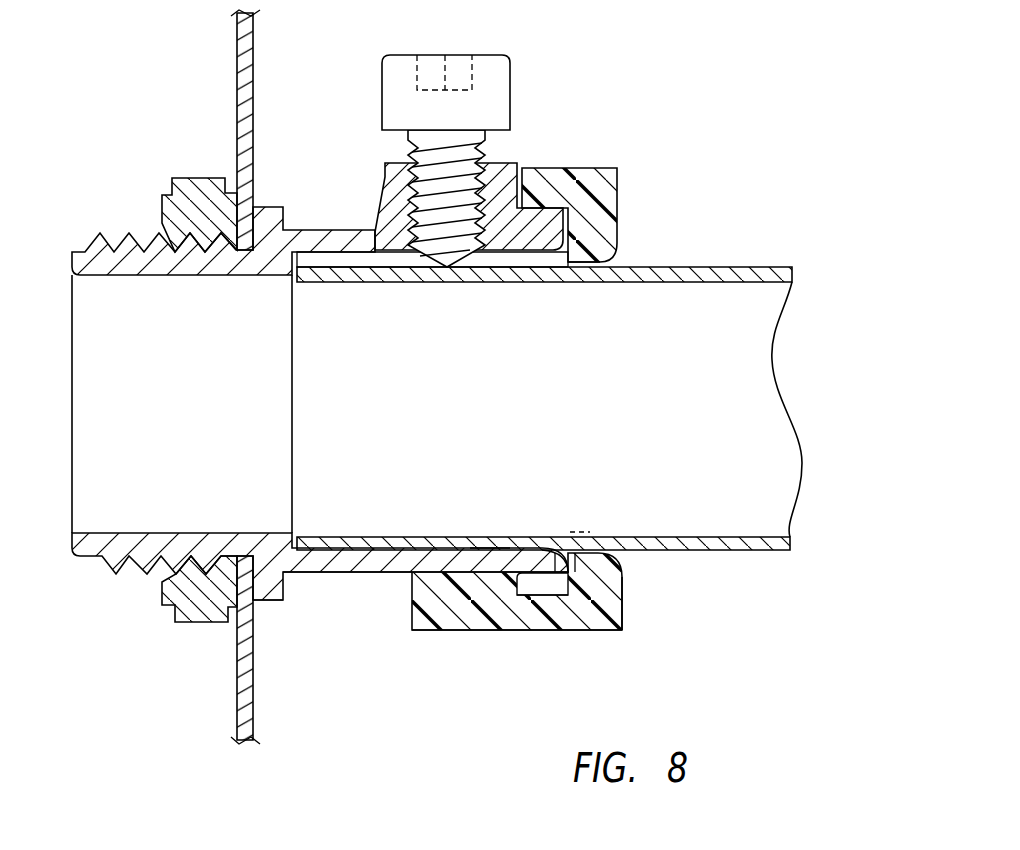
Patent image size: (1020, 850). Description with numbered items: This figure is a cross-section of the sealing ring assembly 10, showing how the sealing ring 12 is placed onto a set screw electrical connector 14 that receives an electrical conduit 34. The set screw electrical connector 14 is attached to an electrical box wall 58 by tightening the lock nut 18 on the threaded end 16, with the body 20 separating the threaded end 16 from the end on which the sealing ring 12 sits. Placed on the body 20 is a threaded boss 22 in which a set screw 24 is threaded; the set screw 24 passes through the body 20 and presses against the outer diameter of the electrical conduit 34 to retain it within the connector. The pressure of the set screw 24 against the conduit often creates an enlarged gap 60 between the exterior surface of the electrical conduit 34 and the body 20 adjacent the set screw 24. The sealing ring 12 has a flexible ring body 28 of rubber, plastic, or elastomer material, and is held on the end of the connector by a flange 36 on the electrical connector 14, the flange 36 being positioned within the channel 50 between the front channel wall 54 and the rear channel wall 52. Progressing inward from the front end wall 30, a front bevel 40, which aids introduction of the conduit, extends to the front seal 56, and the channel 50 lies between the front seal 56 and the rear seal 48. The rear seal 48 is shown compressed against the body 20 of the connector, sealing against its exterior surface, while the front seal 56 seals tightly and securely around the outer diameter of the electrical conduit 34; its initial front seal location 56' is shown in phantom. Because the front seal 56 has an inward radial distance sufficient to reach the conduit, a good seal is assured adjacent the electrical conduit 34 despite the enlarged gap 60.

The sealing ring assembly 10 is at (366, 644).
The sealing ring 12 is at (471, 643).
The set screw electrical connector 14 is at (302, 622).
The threaded end 16 is at (95, 240).
The lock nut 18 is at (184, 181).
The body 20 is at (385, 570).
The threaded boss 22 is at (505, 165).
The set screw 24 is at (500, 62).
The flexible ring body 28 is at (447, 632).
The front end wall 30 is at (622, 600).
The electrical conduit 34 is at (700, 266).
The flange 36 is at (560, 600).
The front bevel 40 is at (612, 258).
The rear seal 48 is at (502, 558).
The channel 50 is at (530, 598).
The rear channel wall 52 is at (535, 560).
The front channel wall 54 is at (568, 560).
The front seal 56 is at (581, 299).
The initial front seal location 56' is at (609, 499).
The electrical box wall 58 is at (253, 87).
The enlarged gap 60 is at (388, 258).